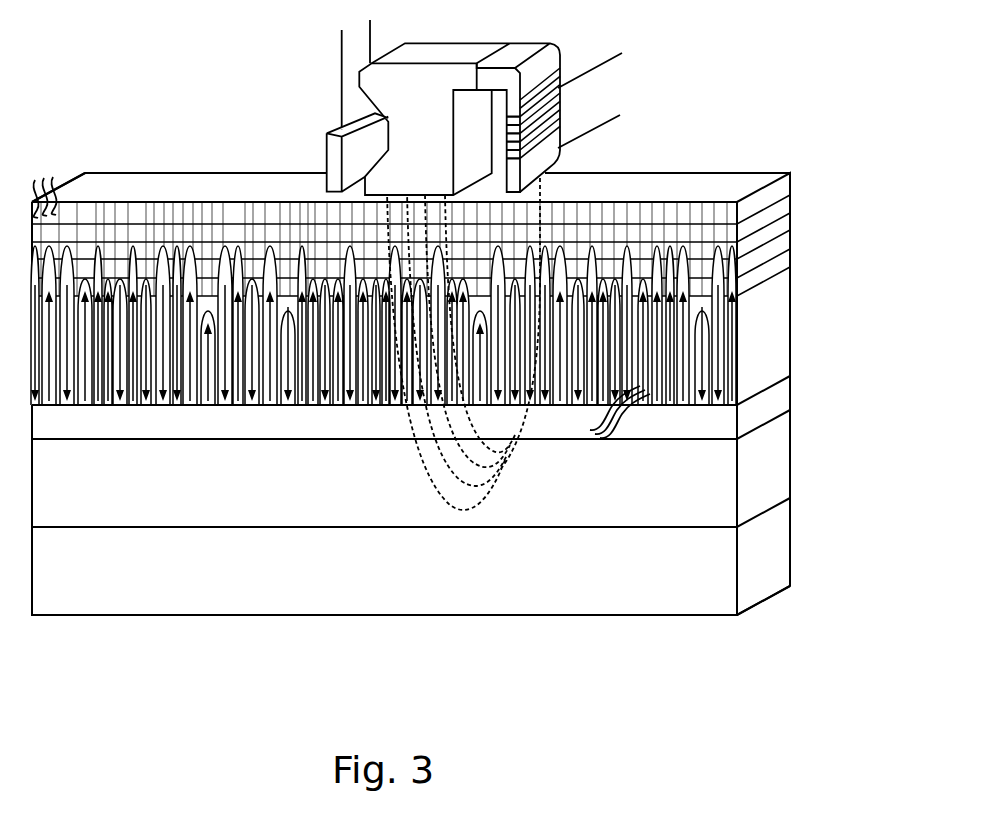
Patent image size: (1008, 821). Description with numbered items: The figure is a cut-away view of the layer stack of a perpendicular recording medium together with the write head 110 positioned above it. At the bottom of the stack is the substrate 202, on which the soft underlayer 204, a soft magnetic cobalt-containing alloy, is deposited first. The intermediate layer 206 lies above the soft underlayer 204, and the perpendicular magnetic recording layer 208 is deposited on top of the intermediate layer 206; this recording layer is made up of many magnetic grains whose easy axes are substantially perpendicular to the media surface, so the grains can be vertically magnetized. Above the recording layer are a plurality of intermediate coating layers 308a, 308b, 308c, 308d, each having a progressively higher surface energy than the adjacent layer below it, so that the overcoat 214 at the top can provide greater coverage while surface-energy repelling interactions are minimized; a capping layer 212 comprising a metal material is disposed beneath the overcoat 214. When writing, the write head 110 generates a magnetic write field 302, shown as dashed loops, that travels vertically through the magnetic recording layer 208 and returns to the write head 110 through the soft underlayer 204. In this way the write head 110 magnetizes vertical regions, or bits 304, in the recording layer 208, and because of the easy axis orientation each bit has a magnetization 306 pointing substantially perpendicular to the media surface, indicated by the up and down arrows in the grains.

The write head 110 is at (568, 55).
The magnetic write field 302 is at (542, 230).
The bits 304 is at (39, 184).
The magnetization 306 is at (597, 413).
The overcoat 214 is at (790, 185).
The capping layer 212 is at (790, 210).
The intermediate coating layer 308d is at (778, 225).
The intermediate coating layer 308c is at (780, 245).
The intermediate coating layer 308b is at (782, 263).
The intermediate coating layer 308a is at (770, 285).
The perpendicular magnetic recording layer 208 is at (790, 341).
The intermediate layer 206 is at (790, 401).
The soft underlayer 204 is at (790, 474).
The substrate 202 is at (790, 557).